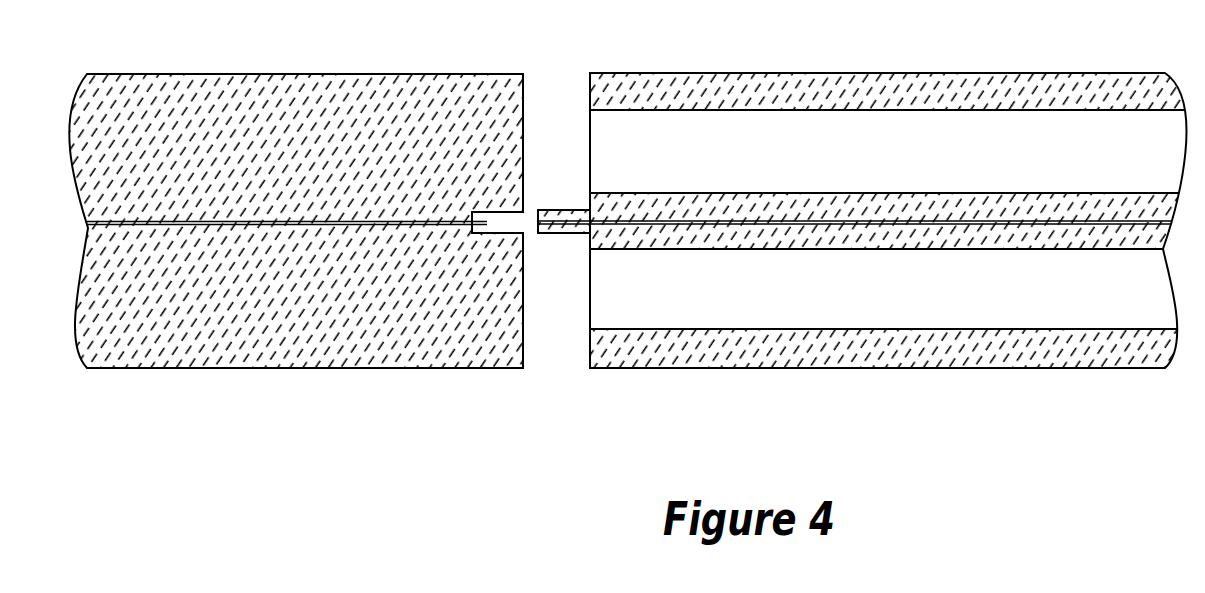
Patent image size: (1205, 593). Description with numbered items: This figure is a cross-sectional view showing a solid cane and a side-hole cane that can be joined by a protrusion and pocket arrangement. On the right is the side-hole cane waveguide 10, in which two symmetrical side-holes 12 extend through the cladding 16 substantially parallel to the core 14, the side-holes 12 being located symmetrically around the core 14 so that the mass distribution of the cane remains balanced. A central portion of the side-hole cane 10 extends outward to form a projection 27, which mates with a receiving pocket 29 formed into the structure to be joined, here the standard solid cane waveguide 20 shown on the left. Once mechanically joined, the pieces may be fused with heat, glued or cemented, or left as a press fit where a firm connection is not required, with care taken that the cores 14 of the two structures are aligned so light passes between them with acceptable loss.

The side-hole cane waveguide 10 is at (905, 384).
The side-holes 12 is at (695, 142).
The core 14 is at (283, 223).
The cladding 16 is at (195, 355).
The cane waveguide 20 is at (328, 384).
The projection 27 is at (552, 233).
The receiving pocket 29 is at (487, 222).